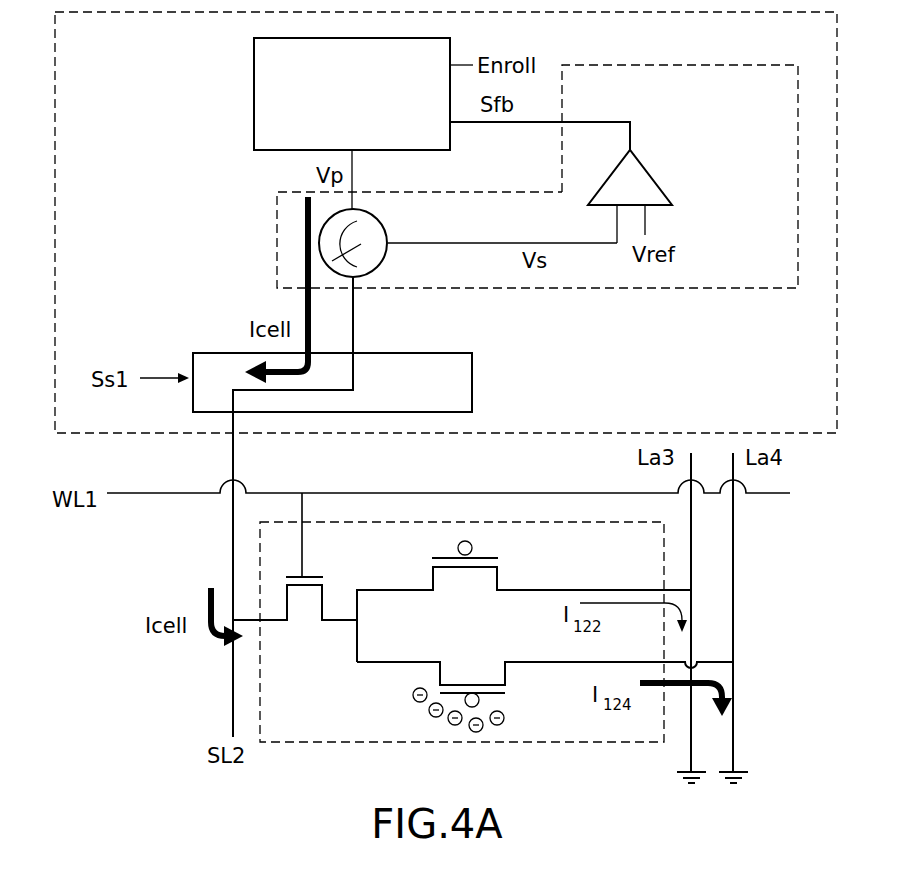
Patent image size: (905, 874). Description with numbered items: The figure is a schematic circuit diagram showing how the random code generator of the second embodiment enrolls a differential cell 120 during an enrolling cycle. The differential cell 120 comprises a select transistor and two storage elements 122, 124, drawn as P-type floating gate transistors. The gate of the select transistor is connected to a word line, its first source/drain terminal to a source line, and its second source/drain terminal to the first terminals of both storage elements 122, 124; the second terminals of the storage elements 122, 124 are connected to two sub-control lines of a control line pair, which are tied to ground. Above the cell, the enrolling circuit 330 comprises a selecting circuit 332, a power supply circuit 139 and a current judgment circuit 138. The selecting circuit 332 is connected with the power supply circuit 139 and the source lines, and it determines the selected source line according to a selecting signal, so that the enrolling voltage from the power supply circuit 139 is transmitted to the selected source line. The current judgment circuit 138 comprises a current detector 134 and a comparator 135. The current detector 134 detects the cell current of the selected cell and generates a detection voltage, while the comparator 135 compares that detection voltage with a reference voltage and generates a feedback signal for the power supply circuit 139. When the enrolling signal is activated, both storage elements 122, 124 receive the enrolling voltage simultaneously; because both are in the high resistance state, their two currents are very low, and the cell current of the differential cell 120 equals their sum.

The enrolling circuit 330 is at (107, 132).
The power supply circuit 139 is at (333, 136).
The current judgment circuit 138 is at (776, 119).
The comparator 135 is at (650, 172).
The current detector 134 is at (378, 220).
The selecting circuit 332 is at (435, 353).
The differential cell 120 is at (483, 617).
The storage element 122 is at (524, 601).
The storage element 124 is at (545, 685).